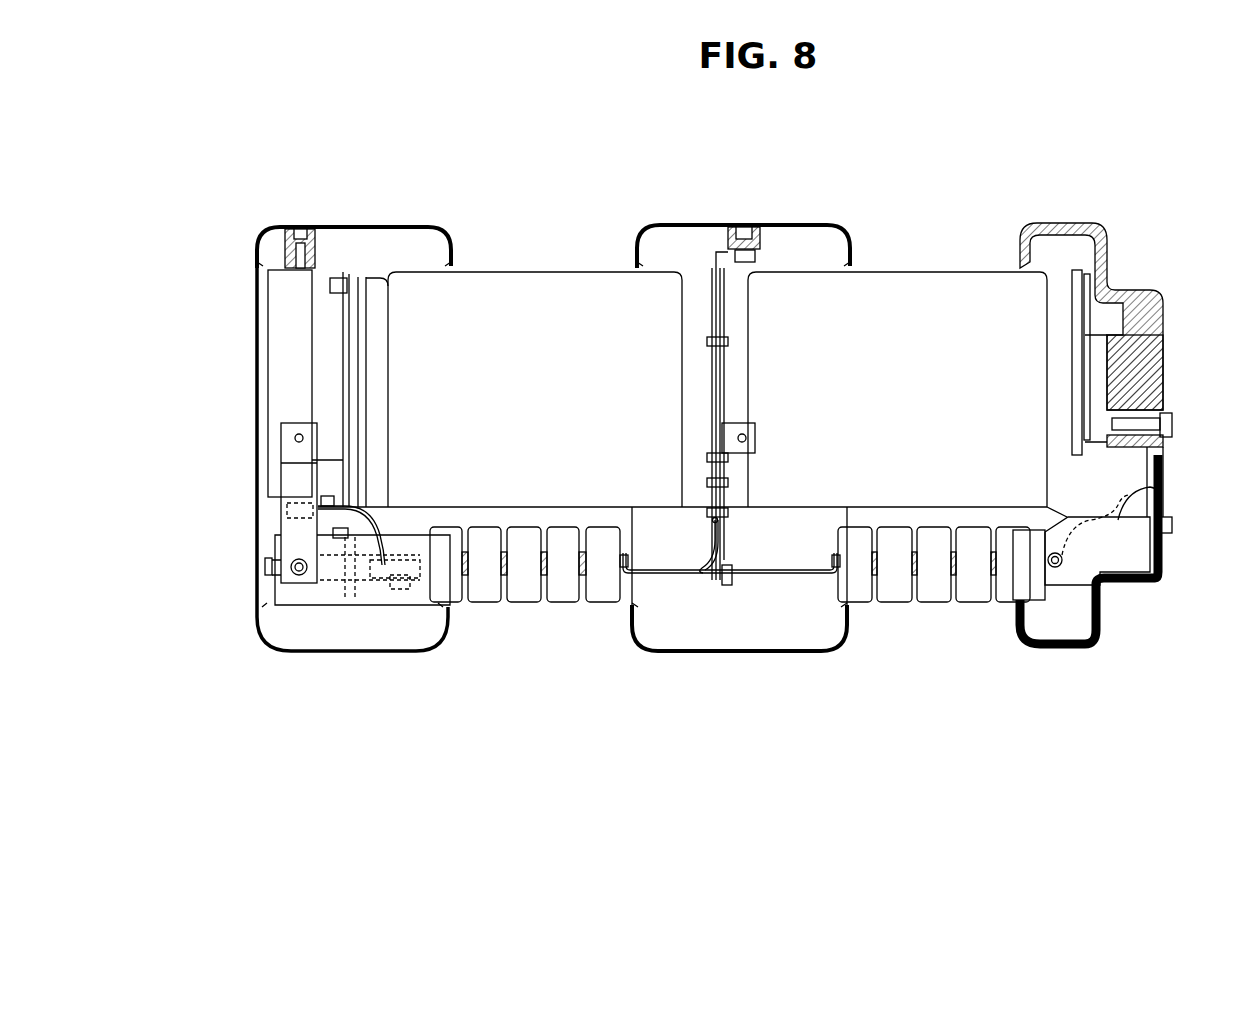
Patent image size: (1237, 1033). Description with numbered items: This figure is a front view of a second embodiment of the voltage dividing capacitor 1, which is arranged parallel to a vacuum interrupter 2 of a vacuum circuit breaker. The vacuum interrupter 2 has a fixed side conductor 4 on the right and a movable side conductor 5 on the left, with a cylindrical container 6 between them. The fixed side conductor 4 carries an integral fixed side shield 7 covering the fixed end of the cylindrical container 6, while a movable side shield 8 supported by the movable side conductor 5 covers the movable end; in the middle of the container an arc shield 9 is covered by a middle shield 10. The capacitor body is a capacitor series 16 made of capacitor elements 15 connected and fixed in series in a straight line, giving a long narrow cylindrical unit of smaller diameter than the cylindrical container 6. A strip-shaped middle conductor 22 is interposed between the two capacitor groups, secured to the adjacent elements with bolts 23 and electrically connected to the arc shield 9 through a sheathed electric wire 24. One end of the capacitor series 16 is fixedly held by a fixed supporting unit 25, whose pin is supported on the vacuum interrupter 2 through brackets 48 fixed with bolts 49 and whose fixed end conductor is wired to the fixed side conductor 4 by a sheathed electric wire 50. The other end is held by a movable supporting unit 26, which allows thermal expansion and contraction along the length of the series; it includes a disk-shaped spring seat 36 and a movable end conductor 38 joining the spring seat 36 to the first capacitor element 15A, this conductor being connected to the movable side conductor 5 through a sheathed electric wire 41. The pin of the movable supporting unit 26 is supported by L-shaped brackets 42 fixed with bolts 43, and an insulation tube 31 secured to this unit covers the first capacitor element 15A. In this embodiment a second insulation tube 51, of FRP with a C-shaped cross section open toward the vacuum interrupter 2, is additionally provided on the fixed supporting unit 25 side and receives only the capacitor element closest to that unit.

The voltage dividing capacitor 1 is at (730, 567).
The capacitor series 16 is at (730, 567).
The vacuum interrupter 2 is at (950, 266).
The fixed side conductor 4 is at (1095, 374).
The movable side conductor 5 is at (325, 356).
The cylindrical container 6 is at (882, 296).
The fixed side shield 7 is at (1065, 223).
The movable side shield 8 is at (355, 226).
The arc shield 9 is at (722, 318).
The middle shield 10 is at (790, 223).
The capacitor element 15 is at (566, 542).
The first capacitor element 15A is at (455, 598).
The middle conductor 22 is at (785, 580).
The bolt 23 is at (630, 565).
The sheathed electric wire 24 is at (735, 548).
The fixed supporting unit 25 is at (1080, 600).
The movable supporting unit 26 is at (283, 626).
The insulation tube 31 is at (371, 600).
The spring seat 36 is at (338, 586).
The movable end conductor 38 is at (405, 580).
The sheathed electric wire 41 is at (380, 520).
The bracket 42 is at (292, 528).
The bolt 43 is at (292, 570).
The bracket 48 is at (1130, 540).
The bolt 49 is at (1060, 570).
The sheathed electric wire 50 is at (1125, 515).
The second insulation tube 51 is at (1030, 585).